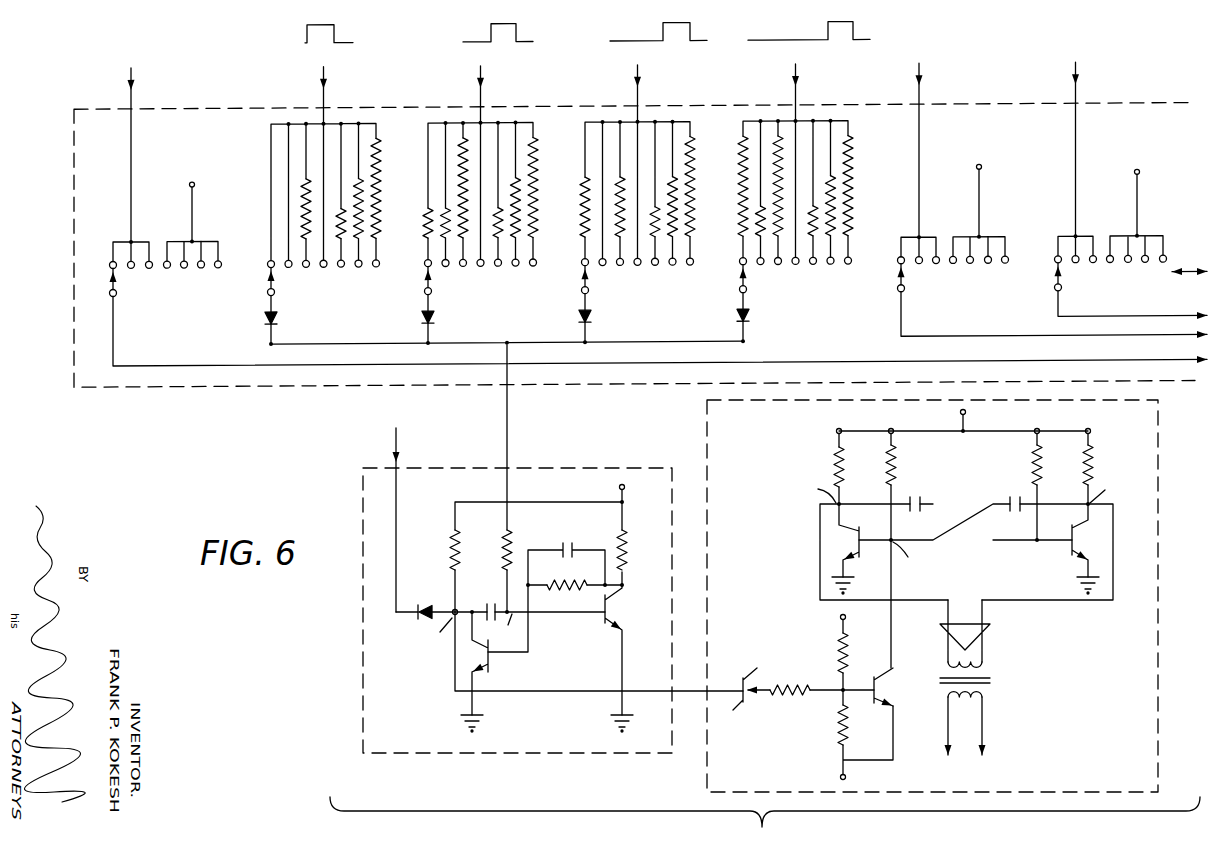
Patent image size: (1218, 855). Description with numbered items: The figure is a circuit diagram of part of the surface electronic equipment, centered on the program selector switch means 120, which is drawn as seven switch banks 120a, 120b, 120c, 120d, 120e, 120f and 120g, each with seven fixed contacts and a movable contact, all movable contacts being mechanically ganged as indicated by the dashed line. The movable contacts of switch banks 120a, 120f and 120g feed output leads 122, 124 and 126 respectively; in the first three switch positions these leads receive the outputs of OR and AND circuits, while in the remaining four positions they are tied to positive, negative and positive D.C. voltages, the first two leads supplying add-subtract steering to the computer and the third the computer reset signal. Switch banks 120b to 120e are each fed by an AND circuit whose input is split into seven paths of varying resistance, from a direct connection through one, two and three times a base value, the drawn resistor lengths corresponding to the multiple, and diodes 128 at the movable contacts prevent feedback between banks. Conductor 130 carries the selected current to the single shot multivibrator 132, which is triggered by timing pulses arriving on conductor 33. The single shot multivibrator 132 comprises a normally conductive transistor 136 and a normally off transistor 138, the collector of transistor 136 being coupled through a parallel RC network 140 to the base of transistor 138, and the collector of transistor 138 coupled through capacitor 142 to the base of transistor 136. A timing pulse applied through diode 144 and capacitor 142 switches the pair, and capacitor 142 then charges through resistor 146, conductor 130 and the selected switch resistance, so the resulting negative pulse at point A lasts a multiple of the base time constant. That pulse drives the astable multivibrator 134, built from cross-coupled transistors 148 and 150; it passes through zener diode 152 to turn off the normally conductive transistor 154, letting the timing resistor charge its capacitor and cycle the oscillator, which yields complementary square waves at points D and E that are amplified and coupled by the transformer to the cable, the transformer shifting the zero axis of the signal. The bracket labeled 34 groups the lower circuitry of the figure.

The switch means 120 is at (97, 397).
The switch bank 120a is at (170, 241).
The switch bank 120b is at (325, 216).
The switch bank 120c is at (480, 215).
The switch bank 120d is at (637, 215).
The switch bank 120e is at (795, 214).
The switch bank 120f is at (954, 231).
The switch bank 120g is at (1131, 232).
The output lead 122 is at (212, 366).
The output lead 124 is at (990, 345).
The output lead 126 is at (1107, 325).
The diode 128 is at (278, 320).
The conductor 130 is at (509, 432).
The conductor 33 is at (398, 436).
The single shot multivibrator 132 is at (354, 667).
The astable multivibrator 134 is at (700, 428).
The transistor 136 is at (605, 622).
The transistor 138 is at (495, 668).
The parallel RC network 140 is at (612, 532).
The capacitor 142 is at (490, 594).
The diode 144 is at (428, 593).
The resistor 146 is at (527, 559).
The transistor 148 is at (862, 557).
The transistor 150 is at (1068, 548).
The zener diode 152 is at (757, 667).
The transistor 154 is at (887, 696).
The transmitter circuit 34 is at (765, 819).